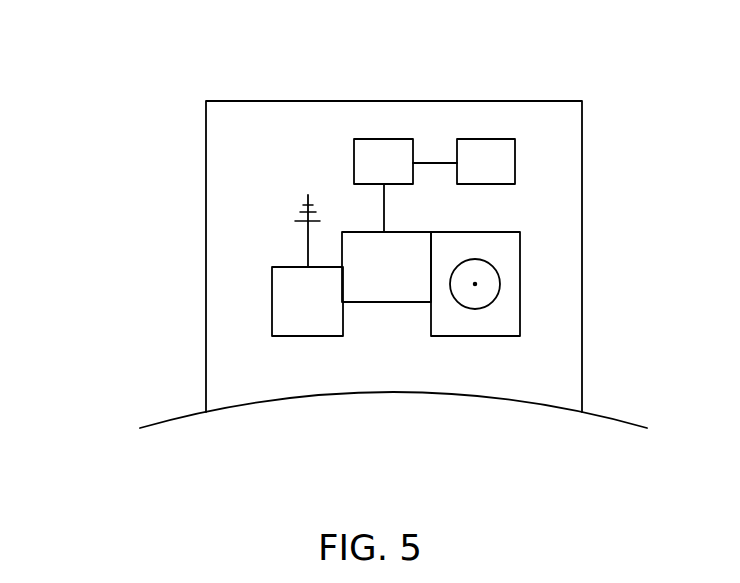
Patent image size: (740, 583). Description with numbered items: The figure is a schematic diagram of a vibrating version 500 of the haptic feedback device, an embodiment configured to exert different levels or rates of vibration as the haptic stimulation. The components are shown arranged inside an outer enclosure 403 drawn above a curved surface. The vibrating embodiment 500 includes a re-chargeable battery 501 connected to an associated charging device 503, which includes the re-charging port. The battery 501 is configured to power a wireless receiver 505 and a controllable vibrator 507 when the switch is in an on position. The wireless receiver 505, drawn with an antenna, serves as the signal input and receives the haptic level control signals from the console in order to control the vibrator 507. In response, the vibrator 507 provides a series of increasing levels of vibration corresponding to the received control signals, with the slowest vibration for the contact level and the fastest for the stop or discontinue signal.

The vibrating version of the haptic feedback device 500 is at (152, 68).
The housing 403 is at (206, 155).
The re-chargeable battery 501 is at (383, 139).
The charging device 503 is at (487, 139).
The wireless receiver 505 is at (272, 302).
The controllable vibrator 507 is at (520, 263).